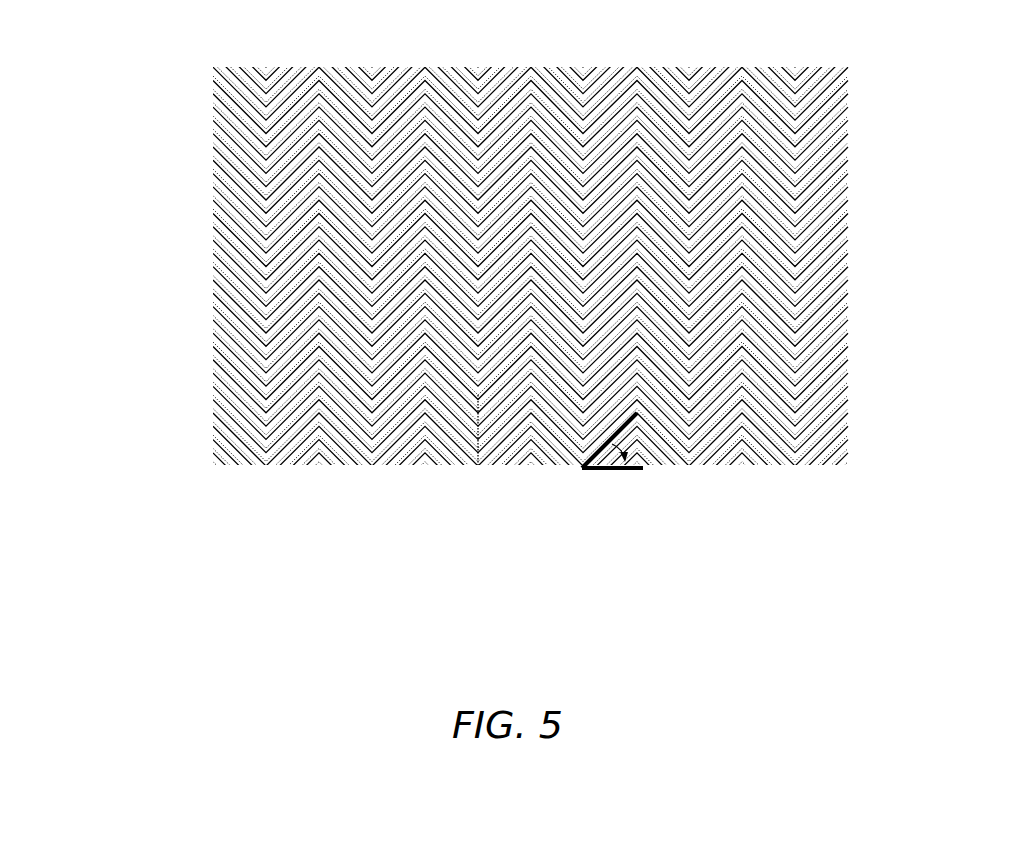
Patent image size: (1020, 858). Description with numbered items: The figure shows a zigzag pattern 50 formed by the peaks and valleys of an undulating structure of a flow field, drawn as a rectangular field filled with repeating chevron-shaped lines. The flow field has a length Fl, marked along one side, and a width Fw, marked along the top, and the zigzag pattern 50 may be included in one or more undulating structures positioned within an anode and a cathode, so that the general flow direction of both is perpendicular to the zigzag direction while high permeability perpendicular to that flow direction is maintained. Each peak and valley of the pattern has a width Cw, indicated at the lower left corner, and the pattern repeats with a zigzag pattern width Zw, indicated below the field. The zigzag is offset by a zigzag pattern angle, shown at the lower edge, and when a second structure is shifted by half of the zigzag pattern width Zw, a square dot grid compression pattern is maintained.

The zigzag pattern 50 is at (160, 216).
The flow field width Fw is at (836, 50).
The flow field length Fl is at (868, 84).
The peak and valley width Cw is at (257, 415).
The zigzag pattern width Zw is at (418, 491).